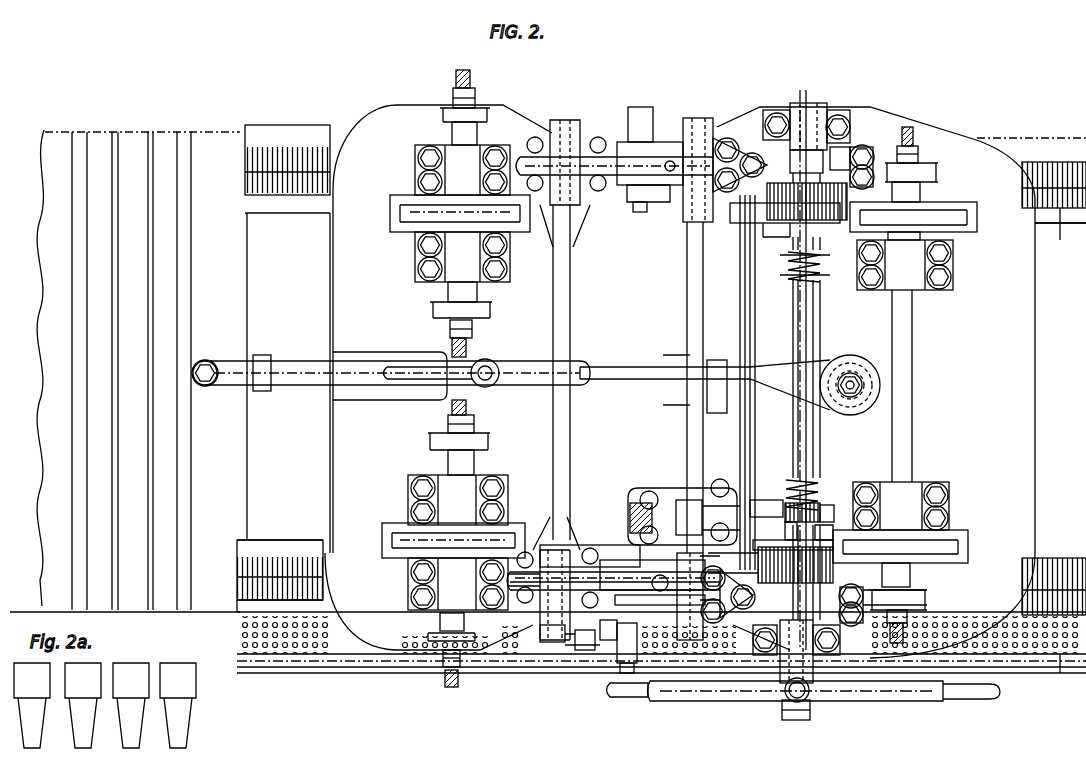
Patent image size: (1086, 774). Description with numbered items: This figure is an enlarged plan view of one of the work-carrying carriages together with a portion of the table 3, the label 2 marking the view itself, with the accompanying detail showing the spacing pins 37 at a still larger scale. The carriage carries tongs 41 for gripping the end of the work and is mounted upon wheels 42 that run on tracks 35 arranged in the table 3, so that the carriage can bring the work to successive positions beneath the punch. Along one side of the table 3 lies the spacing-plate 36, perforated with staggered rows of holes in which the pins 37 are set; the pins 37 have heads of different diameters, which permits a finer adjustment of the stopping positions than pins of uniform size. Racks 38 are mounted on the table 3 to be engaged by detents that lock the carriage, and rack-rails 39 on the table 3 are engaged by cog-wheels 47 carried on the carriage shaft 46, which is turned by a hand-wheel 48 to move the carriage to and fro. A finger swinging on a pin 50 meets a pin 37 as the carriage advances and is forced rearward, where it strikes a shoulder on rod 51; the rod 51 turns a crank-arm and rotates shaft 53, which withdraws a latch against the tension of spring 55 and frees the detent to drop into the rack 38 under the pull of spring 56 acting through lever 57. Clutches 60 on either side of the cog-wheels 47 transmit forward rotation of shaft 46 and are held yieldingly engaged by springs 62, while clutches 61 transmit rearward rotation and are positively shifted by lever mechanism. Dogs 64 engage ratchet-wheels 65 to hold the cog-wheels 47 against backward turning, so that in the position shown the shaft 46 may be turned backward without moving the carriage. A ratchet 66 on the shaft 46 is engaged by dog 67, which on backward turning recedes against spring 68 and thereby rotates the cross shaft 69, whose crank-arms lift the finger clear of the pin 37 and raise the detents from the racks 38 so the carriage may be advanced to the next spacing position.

In FIG. 2, the rails 2 is at (160, 136).
In FIG. 2, the table 3 is at (1037, 142).
In FIG. 2, the tracks 35 is at (1060, 229).
In FIG. 2, the spacing-plate 36 is at (1062, 665).
In FIG. 2, the pins 37 is at (310, 650).
In FIG. 2A, the pins 37 is at (182, 684).
In FIG. 2, the racks 38 is at (1068, 128).
In FIG. 2, the rack-rails 39 is at (240, 555).
In FIG. 2, the tongs 41 is at (205, 360).
In FIG. 2, the wheels 42 is at (980, 548).
In FIG. 2, the shaft 46 is at (814, 327).
In FIG. 2, the cog-wheels 47 is at (845, 175).
In FIG. 2, the hand-wheel 48 is at (858, 701).
In FIG. 2, the pin 50 is at (628, 680).
In FIG. 2, the rod 51 is at (612, 645).
In FIG. 2, the shaft 53 is at (567, 436).
In FIG. 2, the spring 55 is at (256, 540).
In FIG. 2, the spring 56 is at (515, 596).
In FIG. 2, the lever 57 is at (600, 560).
In FIG. 2, the clutches 60 is at (822, 525).
In FIG. 2, the clutches 61 is at (805, 135).
In FIG. 2, the springs 62 is at (818, 490).
In FIG. 2, the dogs 64 is at (778, 215).
In FIG. 2, the ratchet-wheels 65 is at (794, 312).
In FIG. 2, the ratchet 66 is at (824, 505).
In FIG. 2, the dog 67 is at (760, 512).
In FIG. 2, the spring 68 is at (640, 492).
In FIG. 2, the shaft 69 is at (697, 448).